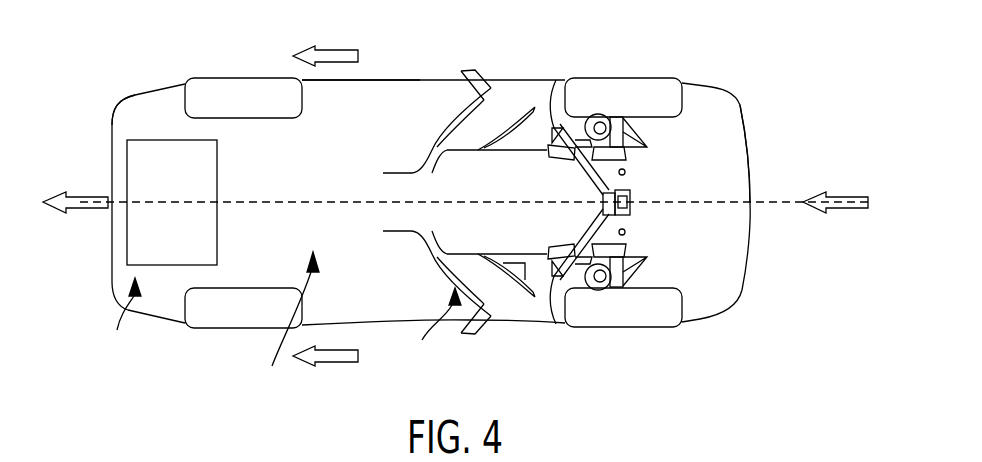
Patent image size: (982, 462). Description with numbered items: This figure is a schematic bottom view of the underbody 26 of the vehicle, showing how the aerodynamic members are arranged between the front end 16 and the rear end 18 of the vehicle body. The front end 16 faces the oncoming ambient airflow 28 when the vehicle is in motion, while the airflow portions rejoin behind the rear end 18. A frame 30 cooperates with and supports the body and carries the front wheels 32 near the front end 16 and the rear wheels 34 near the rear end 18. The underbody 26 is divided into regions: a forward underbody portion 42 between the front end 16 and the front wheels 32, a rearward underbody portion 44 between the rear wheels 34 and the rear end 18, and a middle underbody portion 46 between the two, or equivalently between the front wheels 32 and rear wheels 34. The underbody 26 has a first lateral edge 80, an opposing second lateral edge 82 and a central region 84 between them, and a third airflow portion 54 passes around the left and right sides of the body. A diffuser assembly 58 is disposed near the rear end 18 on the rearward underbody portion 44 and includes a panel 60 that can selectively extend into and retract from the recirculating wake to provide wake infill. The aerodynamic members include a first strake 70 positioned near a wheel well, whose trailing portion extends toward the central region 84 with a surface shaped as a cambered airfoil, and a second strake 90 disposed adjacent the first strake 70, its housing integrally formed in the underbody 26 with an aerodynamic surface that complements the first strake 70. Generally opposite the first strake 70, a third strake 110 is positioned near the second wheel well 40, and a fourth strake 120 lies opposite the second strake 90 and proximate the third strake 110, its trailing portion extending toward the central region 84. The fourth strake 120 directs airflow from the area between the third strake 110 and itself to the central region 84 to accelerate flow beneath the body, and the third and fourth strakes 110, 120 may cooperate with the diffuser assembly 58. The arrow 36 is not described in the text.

The front end 16 is at (748, 227).
The rear end 18 is at (110, 182).
The underbody 26 is at (290, 322).
The ambient airflow 28 is at (847, 193).
The frame 30 is at (623, 258).
The front wheels 32 is at (668, 315).
The rear wheels 34 is at (205, 82).
The forward direction arrow 36 is at (72, 207).
The second wheel well 40 is at (557, 100).
The forward underbody portion 42 is at (715, 184).
The rearward underbody portion 44 is at (134, 124).
The middle underbody portion 46 is at (352, 113).
The third airflow portion 54 is at (333, 51).
The diffuser assembly 58 is at (125, 317).
The panel 60 is at (203, 213).
The first strake 70 is at (517, 287).
The first lateral edge 80 is at (383, 327).
The second lateral edge 82 is at (492, 83).
The central region 84 is at (279, 202).
The second strake 90 is at (435, 329).
The third strake 110 is at (508, 125).
The fourth strake 120 is at (439, 128).